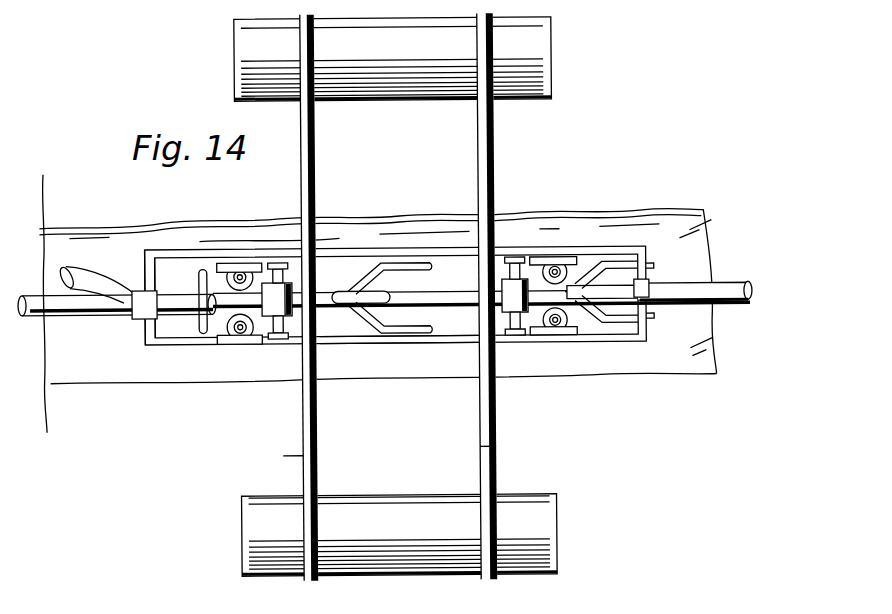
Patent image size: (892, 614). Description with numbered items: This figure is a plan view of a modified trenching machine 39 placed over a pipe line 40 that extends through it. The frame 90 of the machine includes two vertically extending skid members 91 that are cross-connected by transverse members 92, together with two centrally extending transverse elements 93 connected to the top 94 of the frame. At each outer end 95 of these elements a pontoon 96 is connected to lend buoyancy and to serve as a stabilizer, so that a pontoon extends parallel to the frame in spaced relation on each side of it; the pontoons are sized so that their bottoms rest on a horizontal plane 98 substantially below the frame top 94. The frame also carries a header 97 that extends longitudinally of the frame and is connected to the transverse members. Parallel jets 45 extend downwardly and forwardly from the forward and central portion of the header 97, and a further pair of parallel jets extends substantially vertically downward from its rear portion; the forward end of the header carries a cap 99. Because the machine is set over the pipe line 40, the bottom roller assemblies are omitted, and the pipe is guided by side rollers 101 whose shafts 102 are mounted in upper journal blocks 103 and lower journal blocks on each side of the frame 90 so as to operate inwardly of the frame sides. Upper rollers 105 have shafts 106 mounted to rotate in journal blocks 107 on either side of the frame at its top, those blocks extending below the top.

The machine 39 is at (506, 414).
The pipe line 40 is at (730, 288).
The jets 45 is at (432, 276).
The frame 90 is at (194, 352).
The skid members 91 is at (446, 344).
The transverse members 92 is at (145, 268).
The transverse elements 93 is at (312, 430).
The top of the frame 94 is at (342, 348).
The outer end 95 is at (318, 508).
The pontoon 96 is at (386, 506).
The header 97 is at (190, 312).
The horizontal plane 98 is at (432, 184).
The cap 99 is at (651, 288).
The side rollers 101 is at (266, 340).
The shafts 102 is at (240, 330).
The upper journal blocks 103 is at (222, 340).
The upper rollers 105 is at (296, 290).
The shafts 106 is at (284, 272).
The journal blocks 107 is at (285, 328).